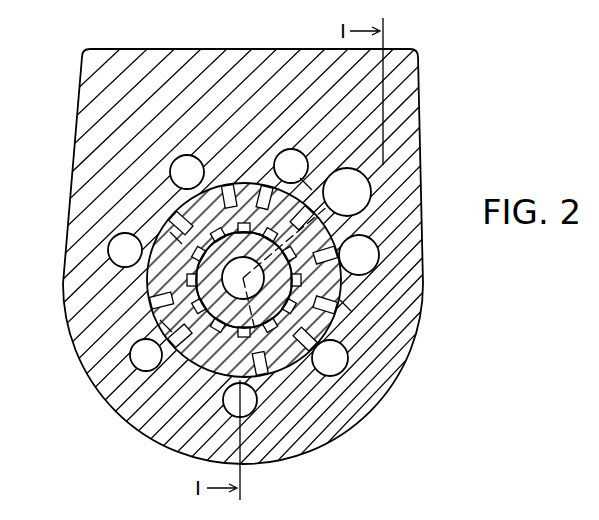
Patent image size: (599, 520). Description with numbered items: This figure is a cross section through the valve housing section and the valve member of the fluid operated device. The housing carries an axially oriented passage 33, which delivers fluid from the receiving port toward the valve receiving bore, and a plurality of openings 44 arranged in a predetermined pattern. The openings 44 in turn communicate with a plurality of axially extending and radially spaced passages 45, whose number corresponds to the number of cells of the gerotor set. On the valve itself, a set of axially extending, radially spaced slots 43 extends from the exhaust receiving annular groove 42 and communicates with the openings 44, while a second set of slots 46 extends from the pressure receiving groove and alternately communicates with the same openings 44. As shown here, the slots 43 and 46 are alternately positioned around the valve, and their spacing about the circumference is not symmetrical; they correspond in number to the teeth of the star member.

The axially oriented passage 33 is at (362, 200).
The annular groove 42 is at (215, 395).
The slots 43 is at (262, 190).
The openings 44 is at (230, 185).
The passages 45 is at (190, 156).
The slots 46 is at (298, 160).